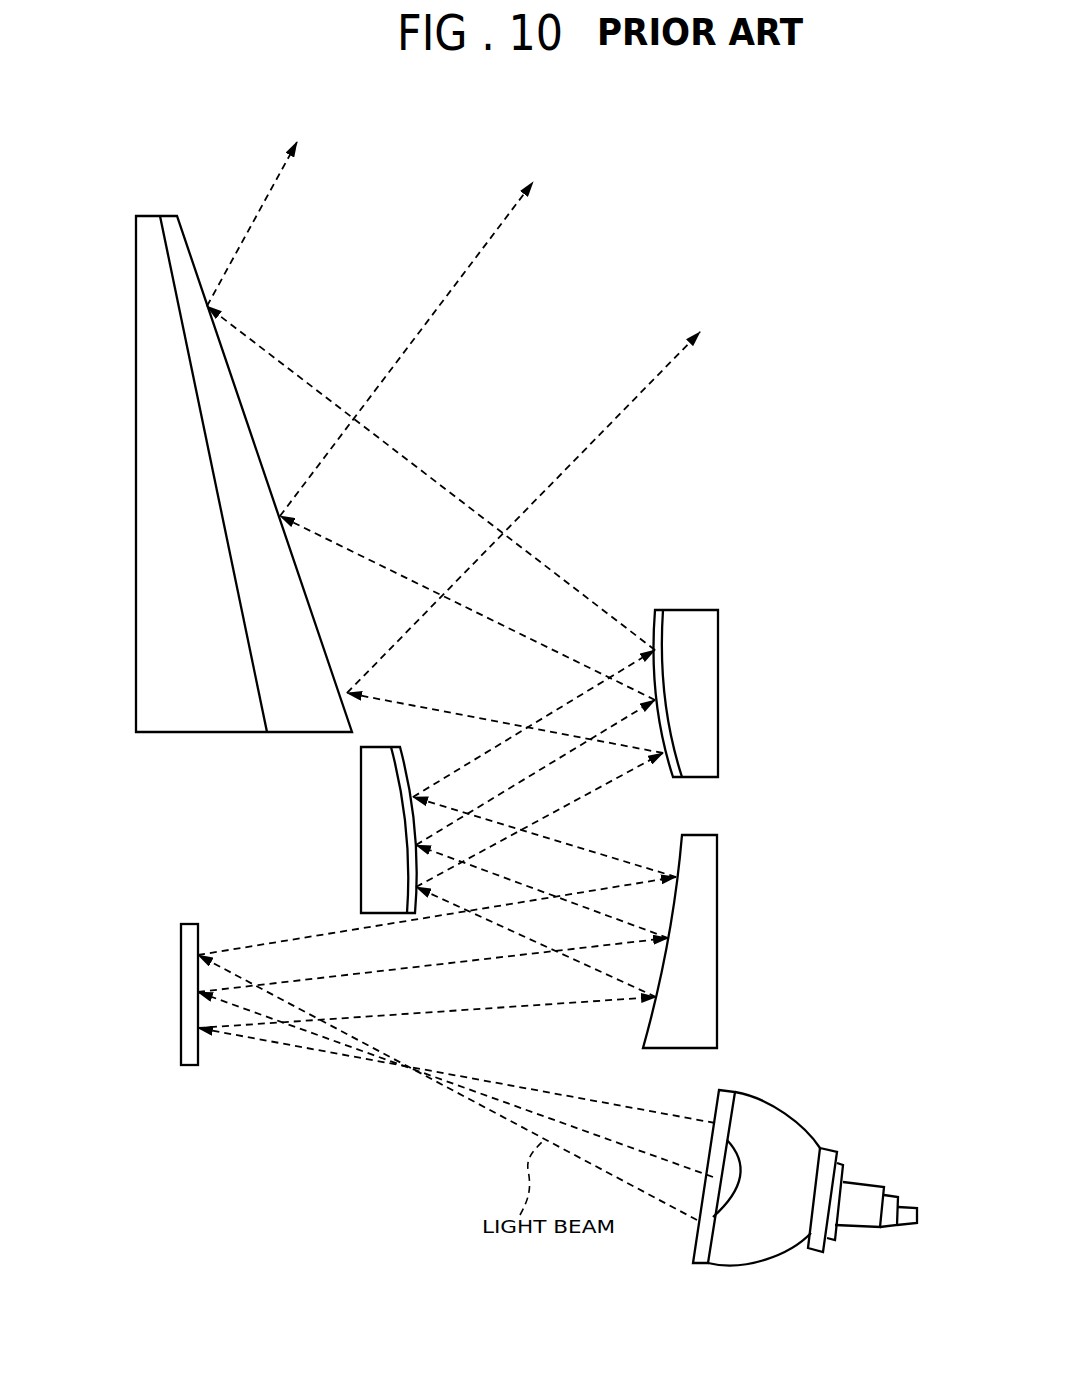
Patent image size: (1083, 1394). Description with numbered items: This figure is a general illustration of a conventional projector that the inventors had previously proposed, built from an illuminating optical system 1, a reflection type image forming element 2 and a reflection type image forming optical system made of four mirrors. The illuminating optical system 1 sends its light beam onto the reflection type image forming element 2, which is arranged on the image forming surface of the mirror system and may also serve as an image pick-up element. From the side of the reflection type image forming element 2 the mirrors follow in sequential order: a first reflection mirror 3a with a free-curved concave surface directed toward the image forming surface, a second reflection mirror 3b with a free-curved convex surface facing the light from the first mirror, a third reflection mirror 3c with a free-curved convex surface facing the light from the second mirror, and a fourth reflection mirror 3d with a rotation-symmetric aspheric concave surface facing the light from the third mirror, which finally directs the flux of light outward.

The illuminating optical system 1 is at (777, 1128).
The reflection type image forming element 2 is at (180, 1004).
The first reflection mirror 3a is at (700, 918).
The second reflection mirror 3b is at (370, 833).
The third reflection mirror 3c is at (700, 691).
The fourth reflection mirror 3d is at (157, 628).